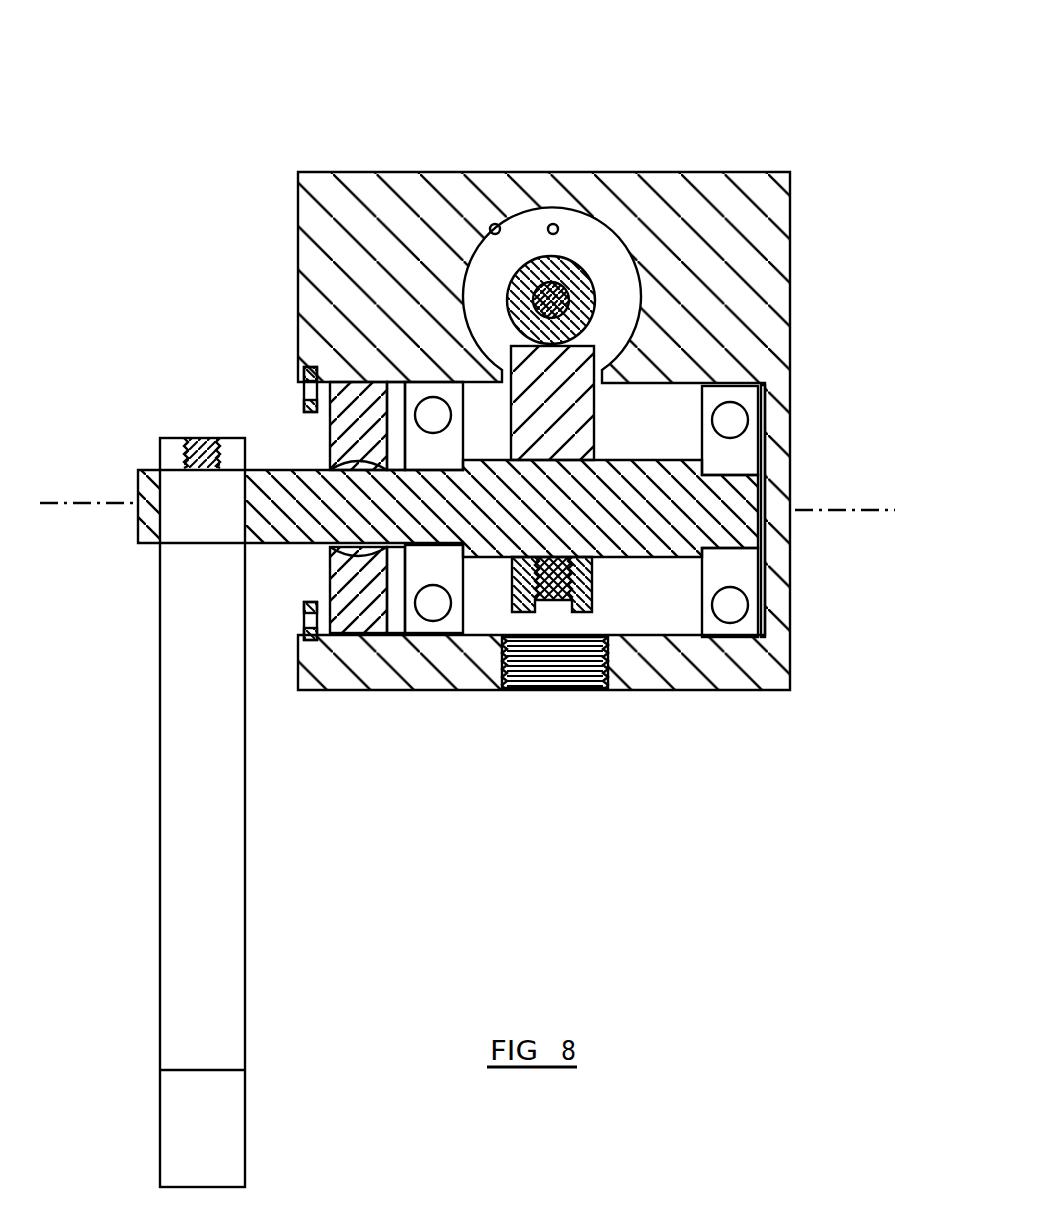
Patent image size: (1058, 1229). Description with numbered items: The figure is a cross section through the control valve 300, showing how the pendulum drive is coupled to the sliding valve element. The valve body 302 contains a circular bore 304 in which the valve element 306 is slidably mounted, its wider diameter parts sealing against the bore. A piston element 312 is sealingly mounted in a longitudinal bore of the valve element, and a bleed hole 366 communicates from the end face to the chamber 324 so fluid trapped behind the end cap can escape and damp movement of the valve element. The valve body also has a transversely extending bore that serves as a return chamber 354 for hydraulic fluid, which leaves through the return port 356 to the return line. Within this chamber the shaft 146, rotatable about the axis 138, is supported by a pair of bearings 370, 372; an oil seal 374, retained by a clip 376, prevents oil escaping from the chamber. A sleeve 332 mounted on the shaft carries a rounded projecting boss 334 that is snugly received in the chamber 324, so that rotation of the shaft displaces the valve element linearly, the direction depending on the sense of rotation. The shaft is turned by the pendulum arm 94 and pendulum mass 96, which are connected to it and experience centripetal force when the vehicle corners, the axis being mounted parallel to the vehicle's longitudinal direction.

The control valve 300 is at (243, 88).
The valve body 302 is at (347, 140).
The circular bore 304 is at (493, 223).
The bleed hole 366 is at (554, 223).
The valve element 306 is at (585, 228).
The chamber 324 is at (623, 267).
The piston element 312 is at (597, 303).
The boss 334 is at (540, 383).
The clip 376 is at (305, 393).
The shaft 146 is at (133, 478).
The axis 138 is at (848, 510).
The sleeve 332 is at (590, 582).
The oil seal 374 is at (357, 617).
The bearing 370 is at (418, 627).
The return port 356 is at (533, 660).
The return chamber 354 is at (667, 617).
The bearing 372 is at (748, 628).
The pendulum arm 94 is at (182, 849).
The pendulum mass 96 is at (183, 1130).